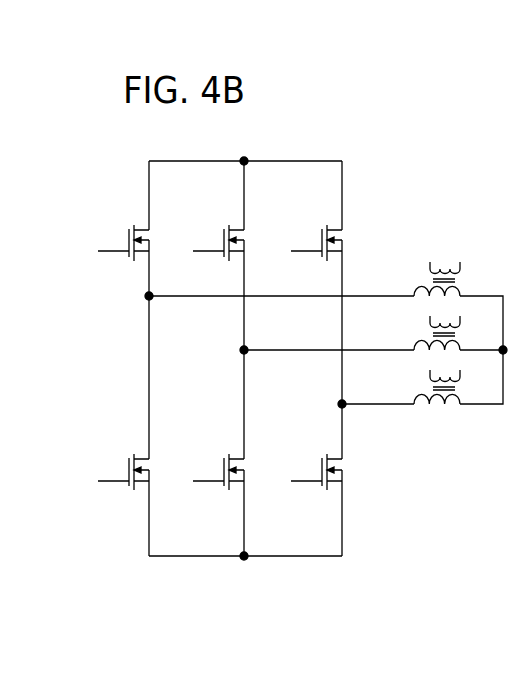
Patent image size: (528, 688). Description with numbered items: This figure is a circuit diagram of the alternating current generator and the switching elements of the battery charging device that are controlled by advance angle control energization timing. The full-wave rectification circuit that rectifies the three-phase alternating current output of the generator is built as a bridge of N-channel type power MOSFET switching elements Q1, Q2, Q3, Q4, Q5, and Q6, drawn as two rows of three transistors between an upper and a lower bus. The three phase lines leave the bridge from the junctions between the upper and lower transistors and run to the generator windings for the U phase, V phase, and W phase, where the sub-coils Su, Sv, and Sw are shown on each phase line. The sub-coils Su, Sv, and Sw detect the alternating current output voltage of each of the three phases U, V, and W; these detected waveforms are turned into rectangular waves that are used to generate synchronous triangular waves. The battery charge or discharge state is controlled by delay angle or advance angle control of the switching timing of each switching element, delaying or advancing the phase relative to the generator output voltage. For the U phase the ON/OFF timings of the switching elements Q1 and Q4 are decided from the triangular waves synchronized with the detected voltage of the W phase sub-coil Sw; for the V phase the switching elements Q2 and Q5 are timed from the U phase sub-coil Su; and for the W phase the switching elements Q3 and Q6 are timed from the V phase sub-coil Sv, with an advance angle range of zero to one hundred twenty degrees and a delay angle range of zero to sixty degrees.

The switching element Q1 is at (123, 231).
The switching element Q2 is at (218, 231).
The switching element Q3 is at (316, 231).
The switching element Q4 is at (123, 460).
The switching element Q5 is at (218, 460).
The switching element Q6 is at (316, 460).
The U phase U is at (416, 270).
The V phase V is at (416, 325).
The W phase W is at (415, 379).
The sub-coil Su is at (453, 277).
The sub-coil Sv is at (453, 331).
The sub-coil Sw is at (453, 385).